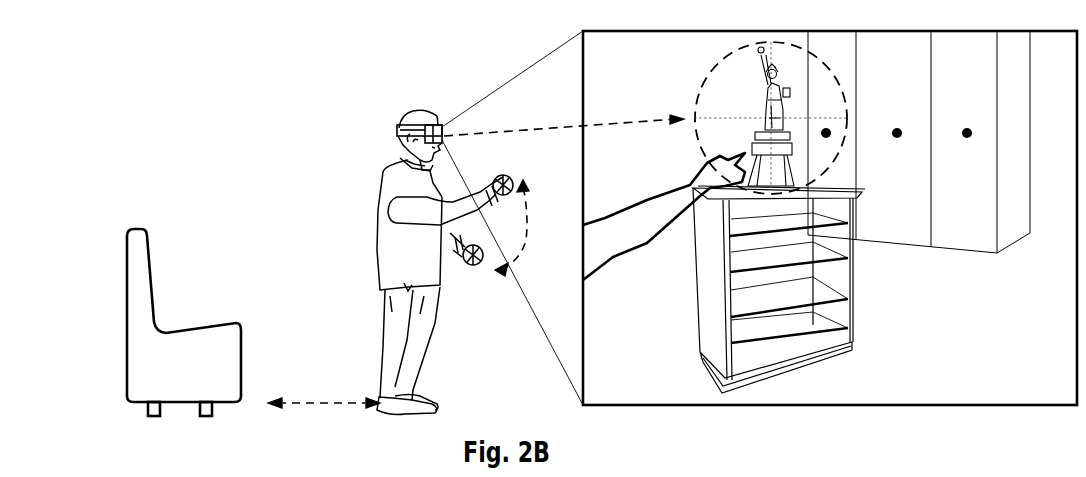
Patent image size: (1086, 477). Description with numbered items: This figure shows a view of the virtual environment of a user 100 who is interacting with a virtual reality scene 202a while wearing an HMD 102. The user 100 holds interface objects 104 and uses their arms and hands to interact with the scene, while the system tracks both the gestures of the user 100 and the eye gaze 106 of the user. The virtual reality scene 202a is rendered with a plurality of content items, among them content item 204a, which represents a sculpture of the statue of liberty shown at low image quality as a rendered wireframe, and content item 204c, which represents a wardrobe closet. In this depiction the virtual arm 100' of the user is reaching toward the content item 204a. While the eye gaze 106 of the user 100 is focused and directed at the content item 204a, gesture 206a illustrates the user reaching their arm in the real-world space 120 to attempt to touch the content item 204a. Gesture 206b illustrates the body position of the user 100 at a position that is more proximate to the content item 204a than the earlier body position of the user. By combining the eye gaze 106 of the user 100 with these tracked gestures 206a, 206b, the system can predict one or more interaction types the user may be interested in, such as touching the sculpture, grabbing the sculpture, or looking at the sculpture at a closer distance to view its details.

The user 100 is at (418, 262).
The HMD 102 is at (406, 117).
The interface objects 104 is at (511, 174).
The eye gaze 106 is at (478, 131).
The real-world space 120 is at (488, 411).
The gesture 206a is at (530, 254).
The gesture 206b is at (310, 403).
The virtual reality scene 202a is at (1062, 396).
The content item 204a is at (782, 87).
The content item 204c is at (985, 254).
The virtual arm 100' is at (664, 216).